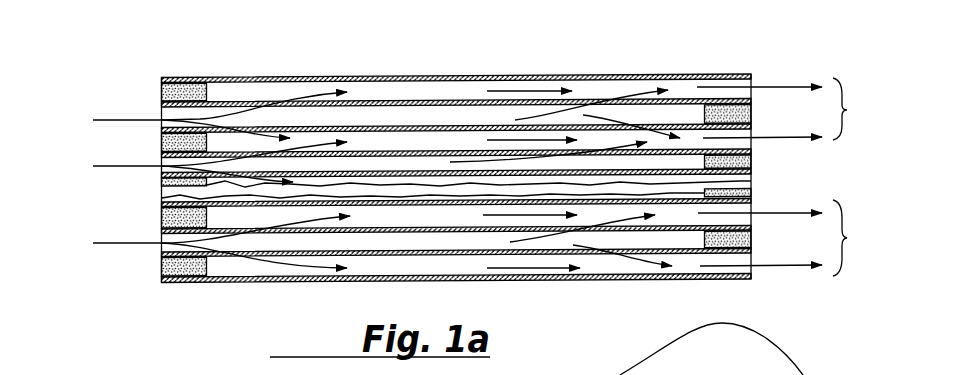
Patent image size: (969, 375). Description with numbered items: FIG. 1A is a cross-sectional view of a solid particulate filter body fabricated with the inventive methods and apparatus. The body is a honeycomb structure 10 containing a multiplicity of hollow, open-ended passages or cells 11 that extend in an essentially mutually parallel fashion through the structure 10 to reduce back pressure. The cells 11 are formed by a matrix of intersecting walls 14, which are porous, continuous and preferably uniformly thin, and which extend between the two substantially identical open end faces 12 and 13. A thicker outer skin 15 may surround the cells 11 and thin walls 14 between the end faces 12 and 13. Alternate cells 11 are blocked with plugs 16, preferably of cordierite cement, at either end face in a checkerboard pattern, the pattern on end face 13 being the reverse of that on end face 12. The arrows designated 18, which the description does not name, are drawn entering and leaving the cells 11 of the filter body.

The honeycomb structure 10 is at (254, 289).
The cells 11 is at (468, 147).
The end face 12 is at (161, 81).
The end face 13 is at (753, 78).
The walls 14 is at (418, 128).
The skin 15 is at (625, 76).
The plugs 16 is at (161, 182).
The fluid streams 18 is at (117, 120).